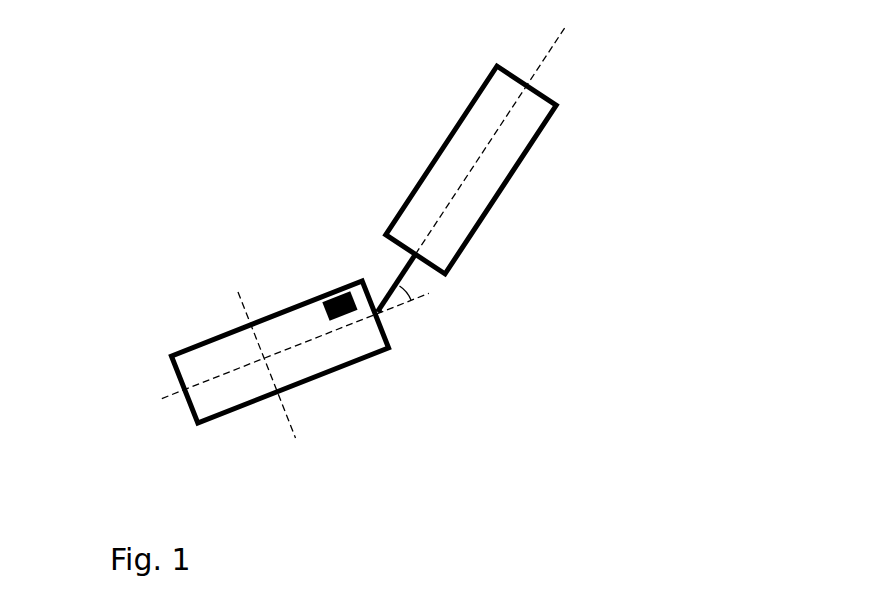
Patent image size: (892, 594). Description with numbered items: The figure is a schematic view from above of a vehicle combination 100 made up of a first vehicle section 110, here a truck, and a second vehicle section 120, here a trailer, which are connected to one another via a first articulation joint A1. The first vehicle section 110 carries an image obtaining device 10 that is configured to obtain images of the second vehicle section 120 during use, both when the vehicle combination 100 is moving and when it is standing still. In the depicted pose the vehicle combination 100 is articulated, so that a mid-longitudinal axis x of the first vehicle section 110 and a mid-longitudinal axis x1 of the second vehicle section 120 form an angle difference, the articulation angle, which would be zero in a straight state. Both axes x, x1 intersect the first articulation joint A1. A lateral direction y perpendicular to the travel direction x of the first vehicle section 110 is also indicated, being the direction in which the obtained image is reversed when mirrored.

The vehicle combination 100 is at (286, 203).
The image obtaining device 10 is at (322, 314).
The first vehicle section 110 is at (303, 393).
The second vehicle section 120 is at (523, 168).
The mid-longitudinal axis of the second vehicle section x1 is at (550, 53).
The mid-longitudinal axis of the first vehicle section x is at (238, 366).
The lateral direction y is at (276, 383).
The first articulation joint A1 is at (383, 313).